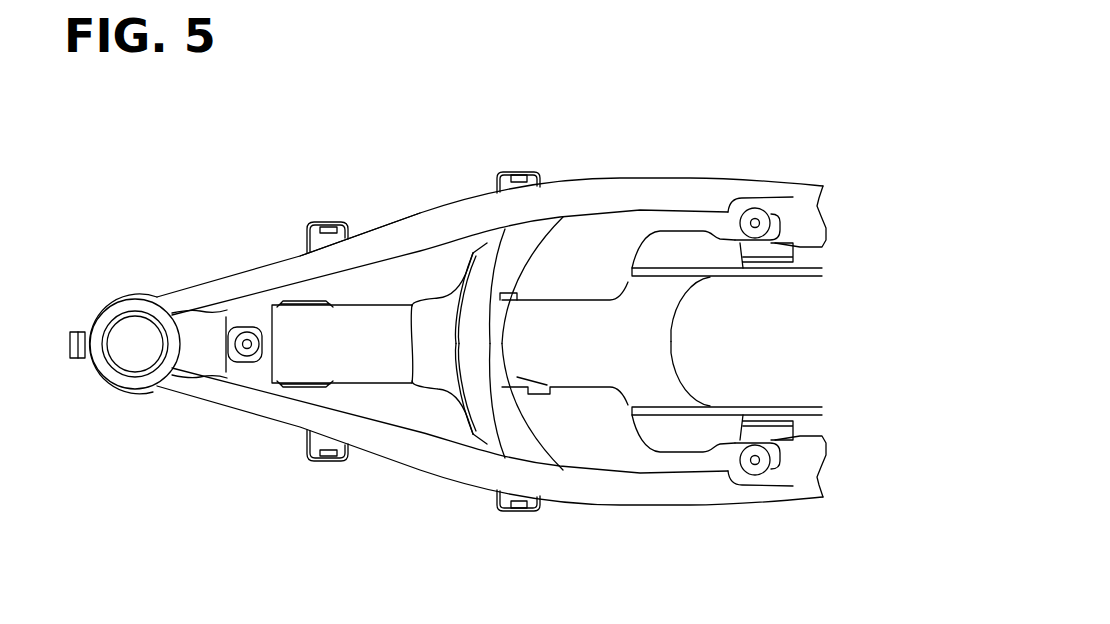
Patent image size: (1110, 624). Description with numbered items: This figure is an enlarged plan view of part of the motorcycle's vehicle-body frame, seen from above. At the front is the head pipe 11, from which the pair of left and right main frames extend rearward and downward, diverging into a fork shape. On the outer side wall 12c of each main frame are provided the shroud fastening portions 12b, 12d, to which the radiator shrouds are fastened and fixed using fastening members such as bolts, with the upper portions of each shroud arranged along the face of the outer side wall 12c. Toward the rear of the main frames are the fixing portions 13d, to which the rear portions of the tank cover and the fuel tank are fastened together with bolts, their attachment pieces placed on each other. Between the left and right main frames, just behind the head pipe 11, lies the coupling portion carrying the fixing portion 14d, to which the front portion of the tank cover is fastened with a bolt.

The head pipe 11 is at (113, 310).
The shroud fastening portion 12b is at (322, 222).
The outer side wall 12c is at (413, 213).
The shroud fastening portion 12d is at (514, 172).
The fixing portion 13d is at (758, 218).
The fixing portion 14d is at (246, 333).